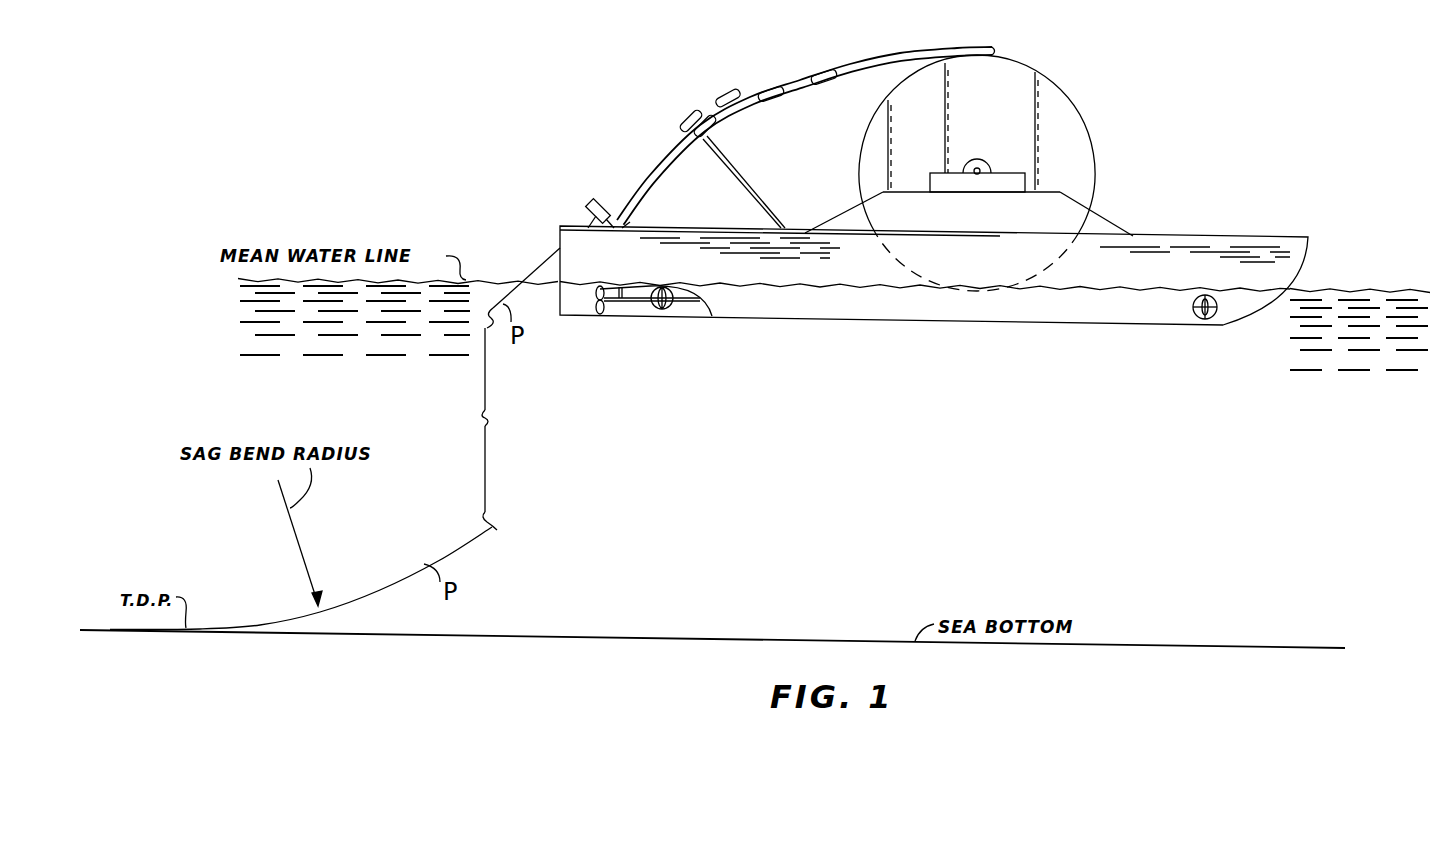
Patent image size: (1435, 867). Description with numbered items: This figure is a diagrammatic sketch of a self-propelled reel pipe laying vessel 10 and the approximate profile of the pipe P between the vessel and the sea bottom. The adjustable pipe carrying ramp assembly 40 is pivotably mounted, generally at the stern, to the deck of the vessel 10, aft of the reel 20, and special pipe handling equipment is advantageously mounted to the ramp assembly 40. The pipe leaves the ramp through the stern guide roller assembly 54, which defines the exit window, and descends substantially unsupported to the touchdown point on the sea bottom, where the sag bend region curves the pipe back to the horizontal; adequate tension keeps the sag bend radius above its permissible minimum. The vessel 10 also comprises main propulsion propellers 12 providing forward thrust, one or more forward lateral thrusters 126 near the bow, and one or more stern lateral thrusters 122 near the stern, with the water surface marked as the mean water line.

The vessel 10 is at (1203, 250).
The main propulsion propellers 12 is at (596, 312).
The reel 20 is at (1078, 147).
The adjustable pipe carrying ramp assembly 40 is at (768, 104).
The stern guide roller assembly 54 is at (590, 202).
The stern lateral thrusters 122 is at (657, 310).
The forward lateral thrusters 126 is at (1198, 319).